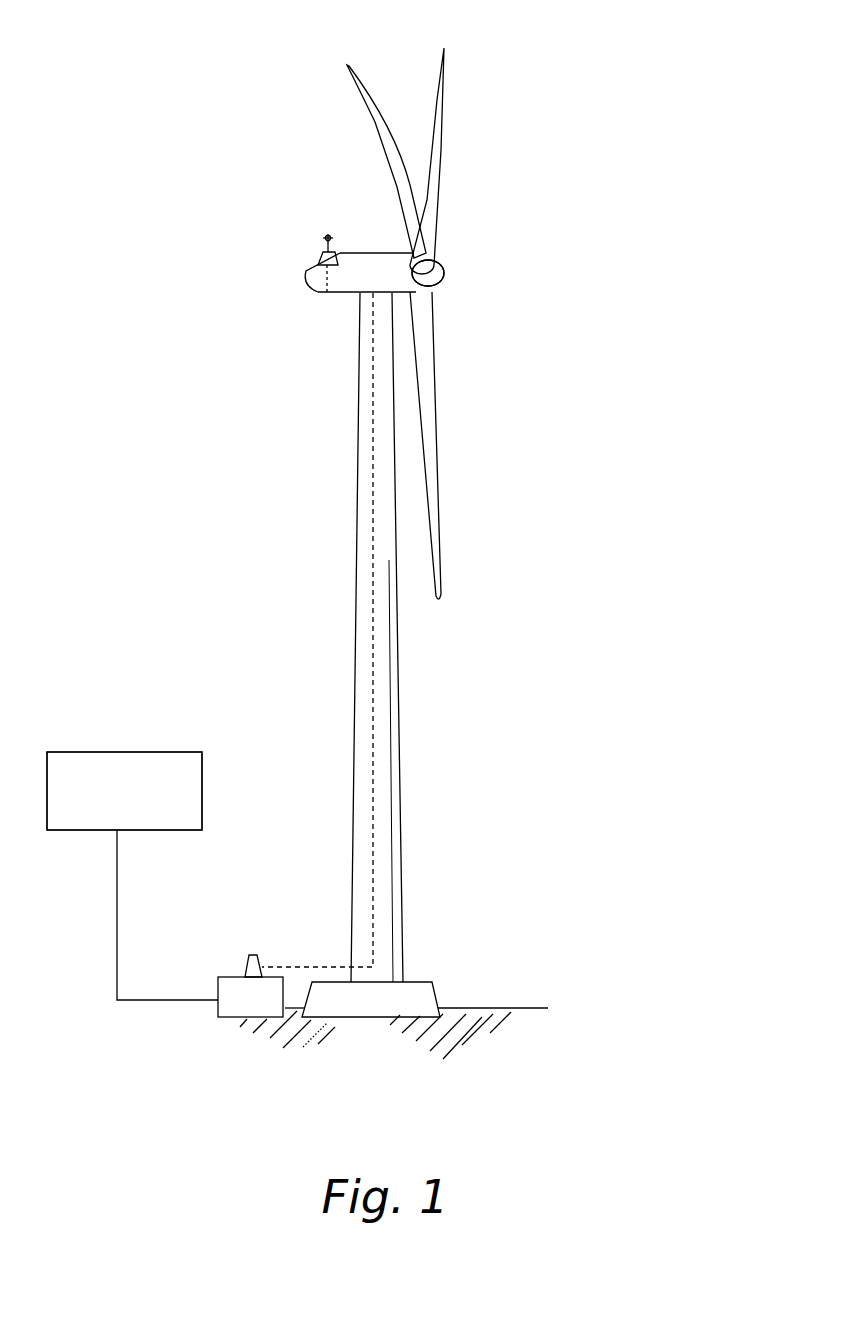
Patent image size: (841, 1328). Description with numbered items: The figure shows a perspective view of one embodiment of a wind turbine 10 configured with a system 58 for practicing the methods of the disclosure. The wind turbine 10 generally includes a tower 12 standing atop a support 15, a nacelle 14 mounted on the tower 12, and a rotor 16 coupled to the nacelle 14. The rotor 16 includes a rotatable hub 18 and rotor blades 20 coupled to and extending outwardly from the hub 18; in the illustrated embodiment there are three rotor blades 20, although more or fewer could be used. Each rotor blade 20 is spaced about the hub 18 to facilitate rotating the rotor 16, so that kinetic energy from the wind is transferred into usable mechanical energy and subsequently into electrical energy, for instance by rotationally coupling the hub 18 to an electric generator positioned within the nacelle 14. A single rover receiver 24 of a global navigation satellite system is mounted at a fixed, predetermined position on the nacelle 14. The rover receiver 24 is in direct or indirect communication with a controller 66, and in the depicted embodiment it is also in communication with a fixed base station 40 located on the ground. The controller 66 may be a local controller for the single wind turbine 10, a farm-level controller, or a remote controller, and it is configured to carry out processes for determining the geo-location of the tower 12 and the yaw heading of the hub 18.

The wind turbine 10 is at (533, 111).
The tower 12 is at (363, 748).
The nacelle 14 is at (338, 298).
The support 15 is at (443, 998).
The rotor 16 is at (447, 252).
The rotatable hub 18 is at (441, 279).
The rotor blade 20 is at (437, 83).
The rover receiver 24 is at (318, 258).
The fixed base station 40 is at (218, 992).
The system 58 is at (212, 652).
The controller 66 is at (202, 788).